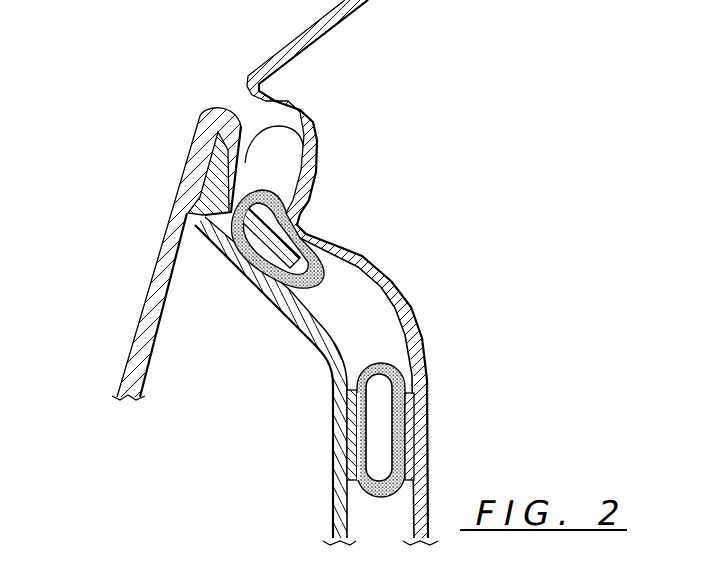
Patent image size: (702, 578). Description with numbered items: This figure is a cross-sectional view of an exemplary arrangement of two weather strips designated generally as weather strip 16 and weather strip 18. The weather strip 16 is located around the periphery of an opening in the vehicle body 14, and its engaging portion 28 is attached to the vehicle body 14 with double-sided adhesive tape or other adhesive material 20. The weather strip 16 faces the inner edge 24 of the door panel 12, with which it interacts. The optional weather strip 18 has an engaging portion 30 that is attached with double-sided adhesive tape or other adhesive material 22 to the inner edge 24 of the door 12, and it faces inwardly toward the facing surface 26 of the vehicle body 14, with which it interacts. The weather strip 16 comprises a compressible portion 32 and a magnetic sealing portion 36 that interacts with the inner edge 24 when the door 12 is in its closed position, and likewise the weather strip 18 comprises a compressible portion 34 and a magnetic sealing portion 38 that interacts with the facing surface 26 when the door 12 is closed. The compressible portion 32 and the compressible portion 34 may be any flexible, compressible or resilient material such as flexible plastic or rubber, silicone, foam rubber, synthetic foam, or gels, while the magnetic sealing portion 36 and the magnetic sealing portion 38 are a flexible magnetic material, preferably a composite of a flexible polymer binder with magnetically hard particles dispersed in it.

The door panel 12 is at (120, 266).
The vehicle body 14 is at (284, 22).
The weather strip 16 is at (452, 332).
The weather strip 18 is at (335, 141).
The adhesive material 20 is at (452, 427).
The adhesive material 22 is at (243, 272).
The inner edge 24 is at (327, 350).
The facing surface 26 is at (424, 272).
The engaging portion 28 is at (448, 467).
The engaging portion 30 is at (253, 312).
The compressible portion 32 is at (447, 387).
The compressible portion 34 is at (313, 221).
The magnetic sealing portion 36 is at (350, 422).
The magnetic sealing portion 38 is at (290, 193).